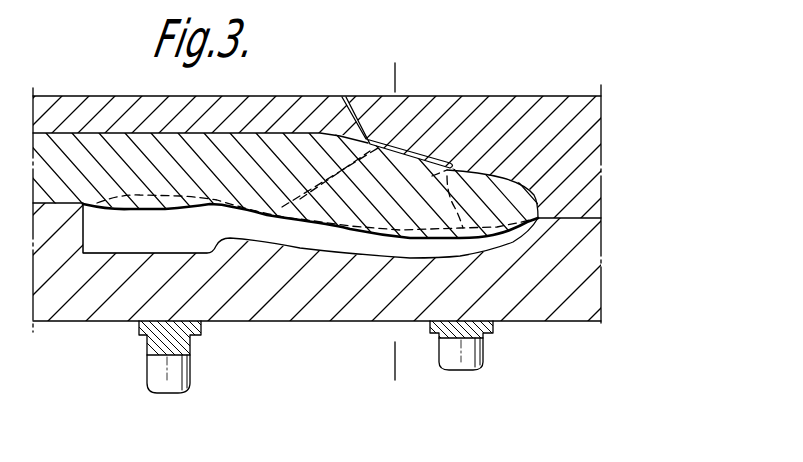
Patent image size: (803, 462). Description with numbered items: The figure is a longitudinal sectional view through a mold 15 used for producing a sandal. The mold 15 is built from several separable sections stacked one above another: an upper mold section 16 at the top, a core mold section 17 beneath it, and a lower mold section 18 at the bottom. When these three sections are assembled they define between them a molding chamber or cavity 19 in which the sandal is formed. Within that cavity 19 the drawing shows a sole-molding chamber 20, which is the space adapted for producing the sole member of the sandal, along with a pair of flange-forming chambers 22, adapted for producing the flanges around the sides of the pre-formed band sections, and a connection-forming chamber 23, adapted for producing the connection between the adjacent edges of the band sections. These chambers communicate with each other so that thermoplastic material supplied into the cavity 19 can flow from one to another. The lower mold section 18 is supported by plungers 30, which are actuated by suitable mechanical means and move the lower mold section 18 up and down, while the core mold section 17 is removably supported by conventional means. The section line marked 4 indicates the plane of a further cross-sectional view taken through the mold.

The mold 15 is at (612, 116).
The upper mold section 16 is at (67, 108).
The core mold section 17 is at (108, 143).
The lower mold section 18 is at (115, 310).
The molding chamber or cavity 19 is at (322, 249).
The sole-molding chamber 20 is at (98, 246).
The flange-forming chambers 22 is at (312, 208).
The connection-forming chamber 23 is at (404, 147).
The plungers 30 is at (168, 368).
The section line 4- 4 is at (387, 75).